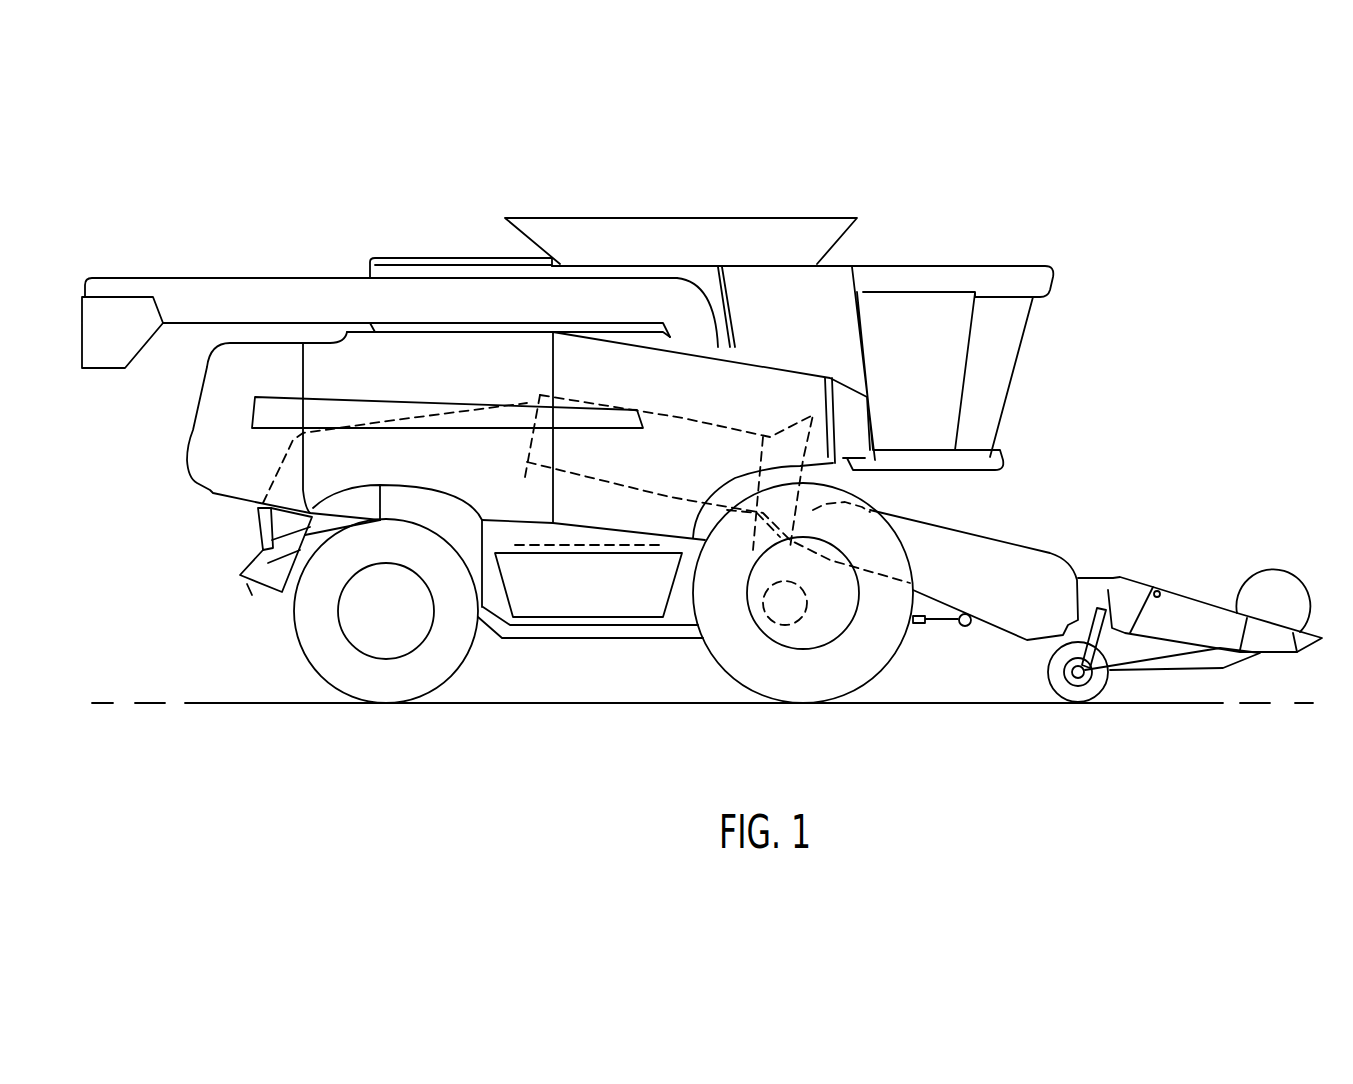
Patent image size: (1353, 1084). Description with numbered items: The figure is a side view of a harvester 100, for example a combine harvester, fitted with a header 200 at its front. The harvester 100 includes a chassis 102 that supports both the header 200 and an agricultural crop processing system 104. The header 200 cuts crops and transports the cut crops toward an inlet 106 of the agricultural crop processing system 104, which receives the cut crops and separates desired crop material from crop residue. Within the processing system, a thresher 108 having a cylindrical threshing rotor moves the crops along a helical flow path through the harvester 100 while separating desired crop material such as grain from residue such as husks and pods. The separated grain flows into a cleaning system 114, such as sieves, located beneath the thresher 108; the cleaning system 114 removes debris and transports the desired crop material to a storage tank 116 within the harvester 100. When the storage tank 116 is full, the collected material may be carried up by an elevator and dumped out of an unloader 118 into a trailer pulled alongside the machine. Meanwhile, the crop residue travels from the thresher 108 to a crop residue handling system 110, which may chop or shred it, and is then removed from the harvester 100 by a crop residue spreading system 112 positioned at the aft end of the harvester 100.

The harvester 100 is at (1055, 177).
The chassis 102 is at (530, 646).
The agricultural crop processing system 104 is at (672, 395).
The inlet 106 is at (880, 504).
The thresher 108 is at (687, 418).
The crop residue handling system 110 is at (355, 393).
The crop residue spreading system 112 is at (248, 562).
The cleaning system 114 is at (560, 553).
The storage tank 116 is at (615, 624).
The unloader 118 is at (221, 276).
The header 200 is at (1240, 557).